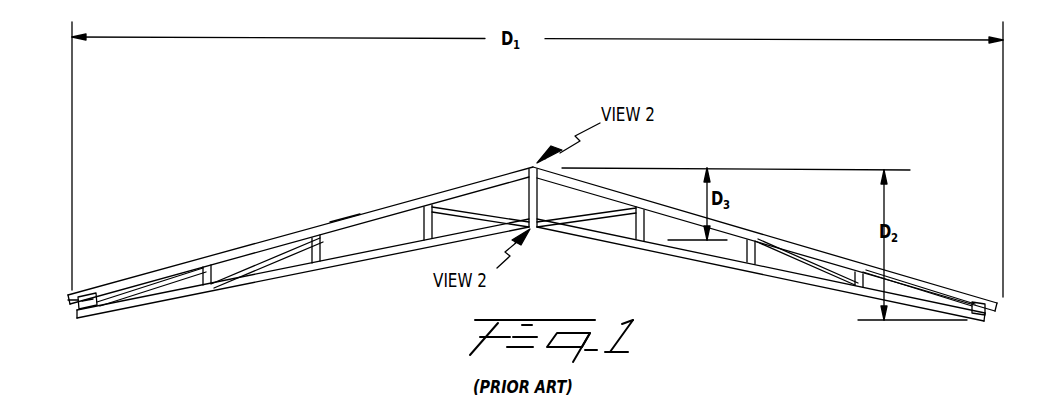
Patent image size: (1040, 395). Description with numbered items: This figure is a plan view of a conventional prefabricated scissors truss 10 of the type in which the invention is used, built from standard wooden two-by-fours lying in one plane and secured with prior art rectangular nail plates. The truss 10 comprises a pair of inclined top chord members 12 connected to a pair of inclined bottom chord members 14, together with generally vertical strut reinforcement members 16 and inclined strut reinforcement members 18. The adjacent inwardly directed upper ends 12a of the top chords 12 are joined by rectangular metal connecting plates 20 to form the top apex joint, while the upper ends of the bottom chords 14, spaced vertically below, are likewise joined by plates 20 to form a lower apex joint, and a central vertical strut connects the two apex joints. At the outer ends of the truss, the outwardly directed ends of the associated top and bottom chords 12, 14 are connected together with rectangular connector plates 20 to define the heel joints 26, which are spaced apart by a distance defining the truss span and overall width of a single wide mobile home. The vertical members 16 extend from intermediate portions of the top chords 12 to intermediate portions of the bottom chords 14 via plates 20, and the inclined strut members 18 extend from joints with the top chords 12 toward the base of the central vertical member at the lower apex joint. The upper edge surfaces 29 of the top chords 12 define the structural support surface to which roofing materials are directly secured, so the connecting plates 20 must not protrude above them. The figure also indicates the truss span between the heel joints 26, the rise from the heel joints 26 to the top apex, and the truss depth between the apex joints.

The scissors truss 10 is at (364, 316).
The top chord member 12 is at (397, 204).
The upper end of top chord 12a is at (531, 166).
The bottom chord member 14 is at (262, 278).
The vertical strut reinforcement member 16 is at (327, 254).
The inclined strut reinforcement member 18 is at (280, 252).
The rectangular metal connecting plate 20 is at (88, 296).
The heel joint 26 is at (64, 347).
The upper edge surface of top chord 29 is at (345, 222).